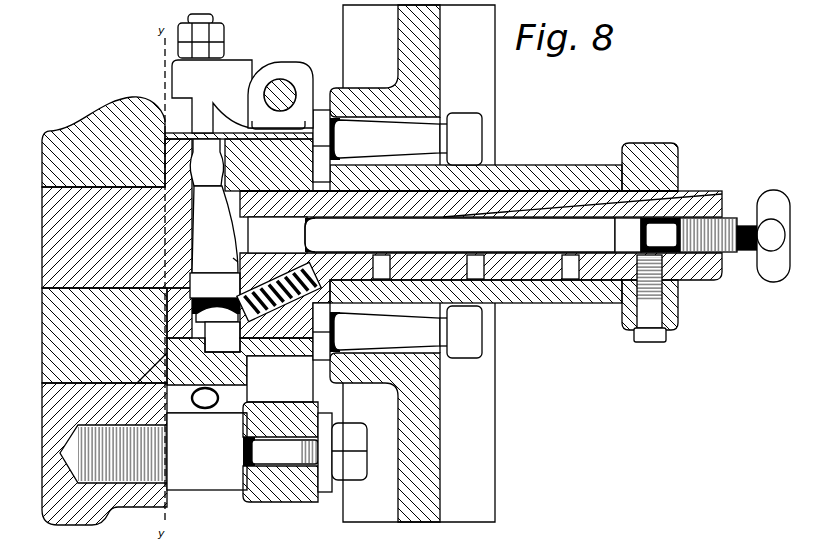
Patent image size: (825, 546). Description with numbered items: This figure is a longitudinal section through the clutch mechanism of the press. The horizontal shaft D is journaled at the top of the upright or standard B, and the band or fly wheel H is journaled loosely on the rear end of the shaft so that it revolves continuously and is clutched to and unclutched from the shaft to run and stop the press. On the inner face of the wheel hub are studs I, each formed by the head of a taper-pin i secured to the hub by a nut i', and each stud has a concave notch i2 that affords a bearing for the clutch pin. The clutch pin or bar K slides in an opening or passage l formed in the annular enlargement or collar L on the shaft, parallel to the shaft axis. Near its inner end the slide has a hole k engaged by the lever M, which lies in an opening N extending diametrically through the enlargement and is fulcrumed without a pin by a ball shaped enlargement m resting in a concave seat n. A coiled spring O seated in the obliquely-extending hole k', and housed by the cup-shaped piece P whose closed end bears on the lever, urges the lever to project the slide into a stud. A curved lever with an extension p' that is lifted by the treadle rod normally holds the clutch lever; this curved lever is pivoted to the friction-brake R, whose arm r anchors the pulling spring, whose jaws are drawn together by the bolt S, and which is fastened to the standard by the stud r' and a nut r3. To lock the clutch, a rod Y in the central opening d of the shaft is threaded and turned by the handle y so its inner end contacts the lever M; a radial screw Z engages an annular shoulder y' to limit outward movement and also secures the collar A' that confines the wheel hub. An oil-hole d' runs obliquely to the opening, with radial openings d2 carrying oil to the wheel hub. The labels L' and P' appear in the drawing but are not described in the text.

The horizontal shaft D is at (52, 236).
The upright or standard B is at (58, 348).
The annular enlargement or collar L is at (161, 313).
The passage L' is at (280, 379).
The clutch pin or bar K is at (239, 162).
The diametrically extending hole k is at (206, 162).
The lever M is at (215, 229).
The ball shaped enlargement m is at (230, 264).
The concave seat n is at (215, 285).
The coiled spring O is at (216, 310).
The cup-shaped piece P is at (222, 337).
The cap P' is at (240, 372).
The extension p' is at (193, 382).
The arm or extension r is at (212, 73).
The stud r' is at (207, 451).
The nut r3 is at (305, 452).
The friction-brake R is at (291, 77).
The bolt S is at (264, 88).
The opening or passage l is at (240, 137).
The opening N is at (238, 236).
The rod Y is at (460, 235).
The obliquely-extending cavity or hole k' is at (319, 235).
The longitudinal opening d is at (481, 264).
The oil-hole d' is at (590, 219).
The radial openings d2 is at (476, 267).
The band or fly wheel H is at (487, 82).
The collar A' is at (665, 305).
The screw Z is at (634, 336).
The handle y is at (715, 236).
The annular shoulder y' is at (628, 235).
The studs or bosses I is at (333, 133).
The taper-pin i is at (387, 235).
The nut i' is at (461, 235).
The concave notch i2 is at (321, 235).